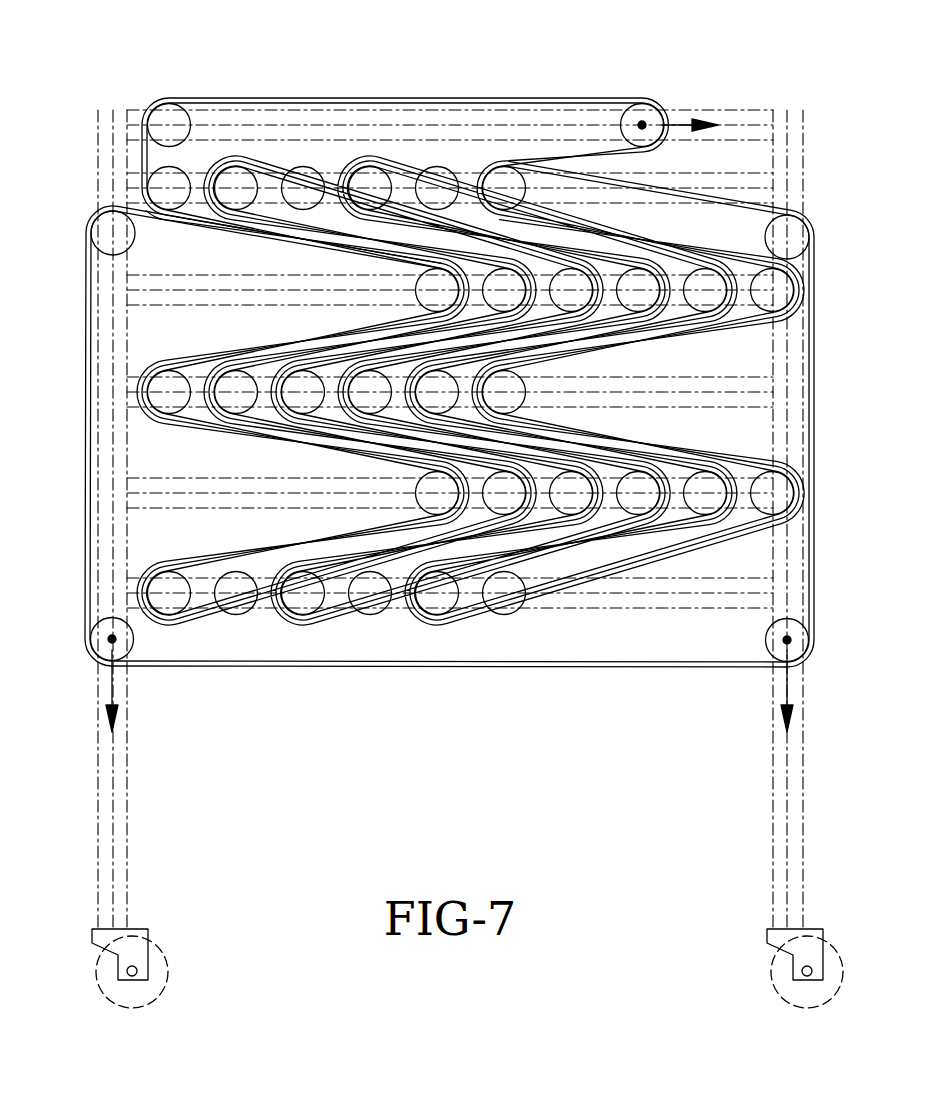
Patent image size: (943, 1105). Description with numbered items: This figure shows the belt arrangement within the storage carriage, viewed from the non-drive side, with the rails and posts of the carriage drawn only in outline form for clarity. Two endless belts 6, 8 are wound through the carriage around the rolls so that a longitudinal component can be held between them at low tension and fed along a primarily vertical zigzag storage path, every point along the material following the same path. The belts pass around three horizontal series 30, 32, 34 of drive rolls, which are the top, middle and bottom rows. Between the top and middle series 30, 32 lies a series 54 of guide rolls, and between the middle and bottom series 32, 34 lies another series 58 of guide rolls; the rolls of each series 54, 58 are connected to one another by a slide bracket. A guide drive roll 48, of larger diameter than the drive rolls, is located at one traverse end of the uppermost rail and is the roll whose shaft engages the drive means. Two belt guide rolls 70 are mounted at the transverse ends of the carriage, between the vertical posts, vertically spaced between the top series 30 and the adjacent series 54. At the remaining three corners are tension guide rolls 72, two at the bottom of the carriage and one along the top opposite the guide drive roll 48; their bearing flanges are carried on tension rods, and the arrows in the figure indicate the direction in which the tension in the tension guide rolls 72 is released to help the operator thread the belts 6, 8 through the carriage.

The endless belt 6 is at (388, 97).
The endless belt 8 is at (815, 380).
The top series of drive rolls 30 is at (148, 185).
The middle series of drive rolls 32 is at (148, 386).
The bottom series of drive rolls 34 is at (148, 584).
The guide drive roll 48 is at (167, 112).
The series of guide rolls 54 is at (808, 291).
The series of guide rolls 58 is at (808, 492).
The belt guide rolls 70 is at (103, 232).
The tension guide rolls 72 is at (648, 112).